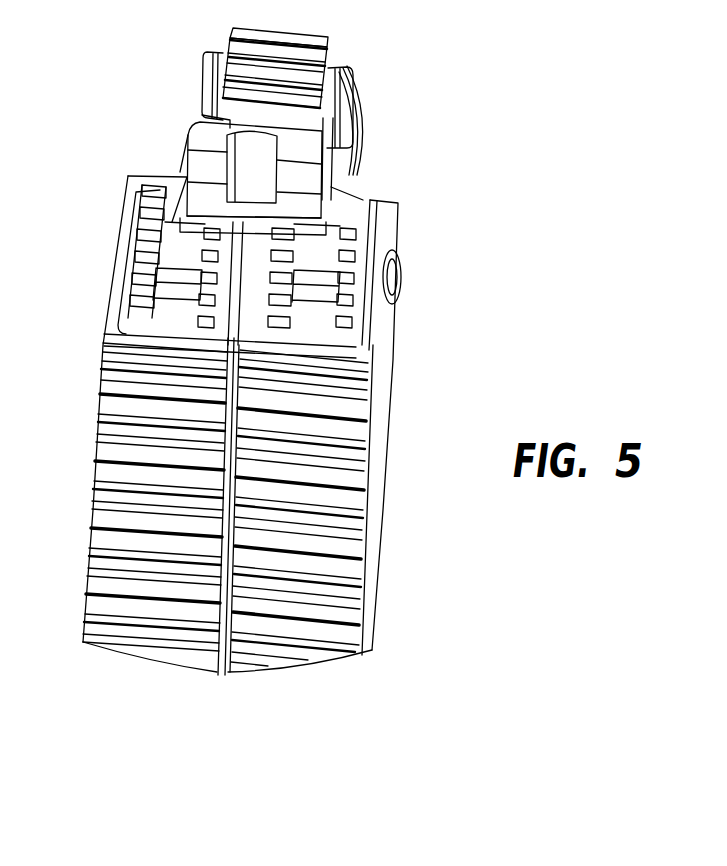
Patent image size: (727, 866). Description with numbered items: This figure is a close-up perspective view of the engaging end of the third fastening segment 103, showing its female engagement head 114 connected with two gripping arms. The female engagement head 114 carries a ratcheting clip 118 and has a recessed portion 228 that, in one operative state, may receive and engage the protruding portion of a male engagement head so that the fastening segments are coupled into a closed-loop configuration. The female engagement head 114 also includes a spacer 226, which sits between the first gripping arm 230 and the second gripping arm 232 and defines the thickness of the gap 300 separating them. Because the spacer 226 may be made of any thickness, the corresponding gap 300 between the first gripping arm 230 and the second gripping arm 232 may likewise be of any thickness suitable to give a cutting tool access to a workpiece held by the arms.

The third fastening segment 103 is at (408, 722).
The female engagement head 114 is at (317, 170).
The ratcheting clip 118 is at (345, 173).
The spacer 226 is at (153, 280).
The recessed portion 228 is at (257, 162).
The first gripping arm 230 is at (357, 353).
The second gripping arm 232 is at (113, 320).
The gap 300 is at (216, 668).